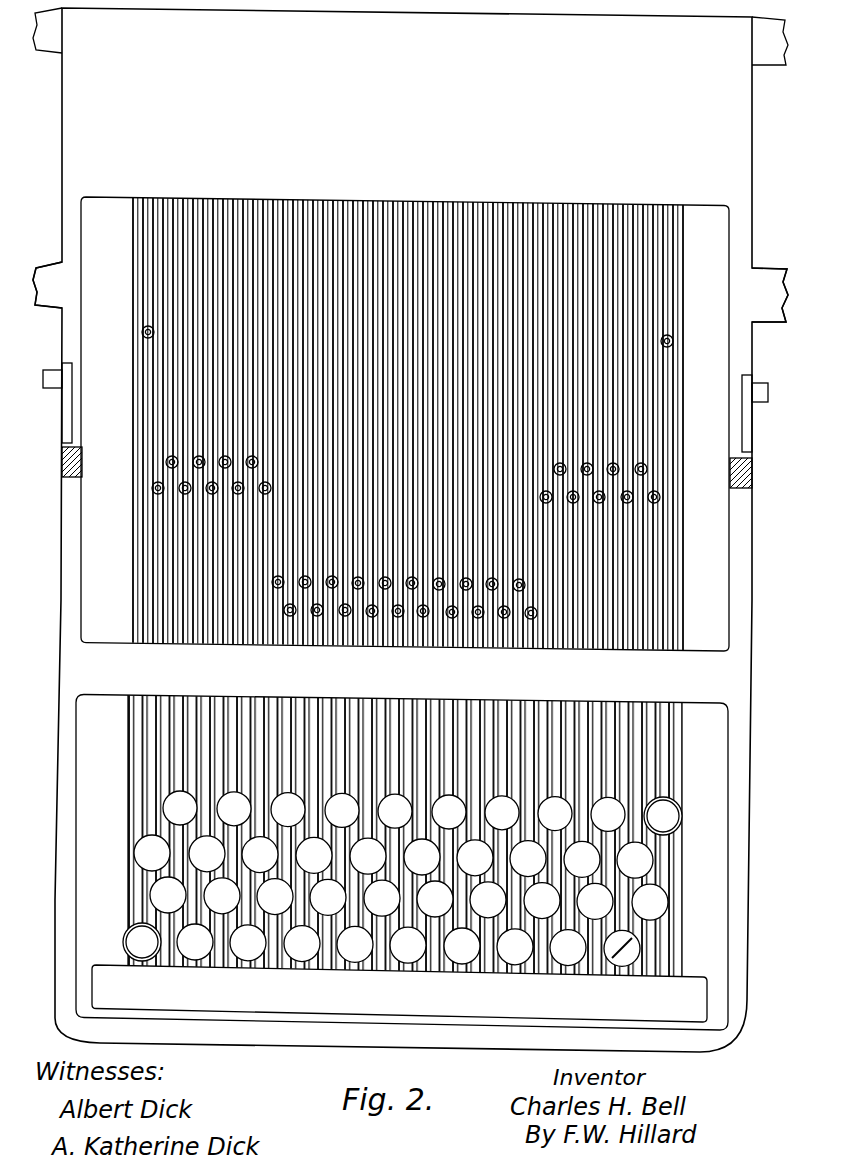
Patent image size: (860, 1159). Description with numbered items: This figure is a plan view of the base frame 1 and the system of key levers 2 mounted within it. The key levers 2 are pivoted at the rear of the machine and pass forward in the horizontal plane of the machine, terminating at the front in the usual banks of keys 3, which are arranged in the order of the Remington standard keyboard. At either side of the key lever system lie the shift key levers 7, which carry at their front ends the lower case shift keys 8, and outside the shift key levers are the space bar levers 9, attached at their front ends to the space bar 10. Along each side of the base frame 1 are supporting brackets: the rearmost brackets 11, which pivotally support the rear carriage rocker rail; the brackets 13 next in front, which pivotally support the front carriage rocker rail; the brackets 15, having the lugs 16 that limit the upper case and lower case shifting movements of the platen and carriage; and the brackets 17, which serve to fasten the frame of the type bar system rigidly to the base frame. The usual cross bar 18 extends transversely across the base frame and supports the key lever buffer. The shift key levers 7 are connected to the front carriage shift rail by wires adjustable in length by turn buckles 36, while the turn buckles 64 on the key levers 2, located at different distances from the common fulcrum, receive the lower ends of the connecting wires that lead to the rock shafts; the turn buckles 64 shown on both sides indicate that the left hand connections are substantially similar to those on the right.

The base frame 1 is at (300, 1062).
The key levers 2 is at (270, 208).
The keys 3 is at (162, 807).
The shift key levers 7 is at (665, 757).
The lower case shift keys 8 is at (682, 820).
The space bar levers 9 is at (128, 845).
The space bar 10 is at (702, 962).
The rearmost brackets 11 is at (48, 53).
The brackets 13 is at (770, 310).
The brackets 15 is at (50, 306).
The lugs 16 is at (43, 382).
The brackets 17 is at (62, 465).
The cross bar 18 is at (405, 440).
The turn buckles 36 is at (142, 333).
The turn buckles 64 is at (152, 490).